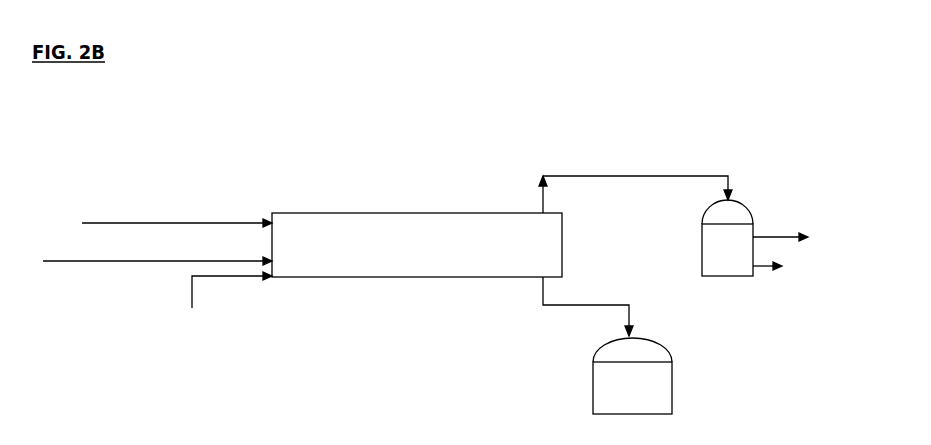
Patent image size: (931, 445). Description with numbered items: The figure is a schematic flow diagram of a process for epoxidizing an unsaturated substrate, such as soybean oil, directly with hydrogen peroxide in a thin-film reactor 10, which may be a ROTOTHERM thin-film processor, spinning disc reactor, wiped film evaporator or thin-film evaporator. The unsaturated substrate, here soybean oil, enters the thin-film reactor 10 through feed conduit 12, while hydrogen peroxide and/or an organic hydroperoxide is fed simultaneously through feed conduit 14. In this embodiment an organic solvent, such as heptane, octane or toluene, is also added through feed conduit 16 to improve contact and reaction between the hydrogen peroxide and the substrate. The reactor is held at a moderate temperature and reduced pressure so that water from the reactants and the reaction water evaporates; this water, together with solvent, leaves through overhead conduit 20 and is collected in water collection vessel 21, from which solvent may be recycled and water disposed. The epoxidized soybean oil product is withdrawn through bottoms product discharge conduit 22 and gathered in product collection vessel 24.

The thin-film reactor 10 is at (417, 245).
The feed conduit 12 is at (213, 277).
The feed conduit 14 is at (147, 261).
The feed conduit 16 is at (183, 223).
The overhead conduit 20 is at (543, 200).
The water collection vessel 21 is at (757, 244).
The bottoms product discharge conduit 22 is at (545, 294).
The product collection vessel 24 is at (632, 376).